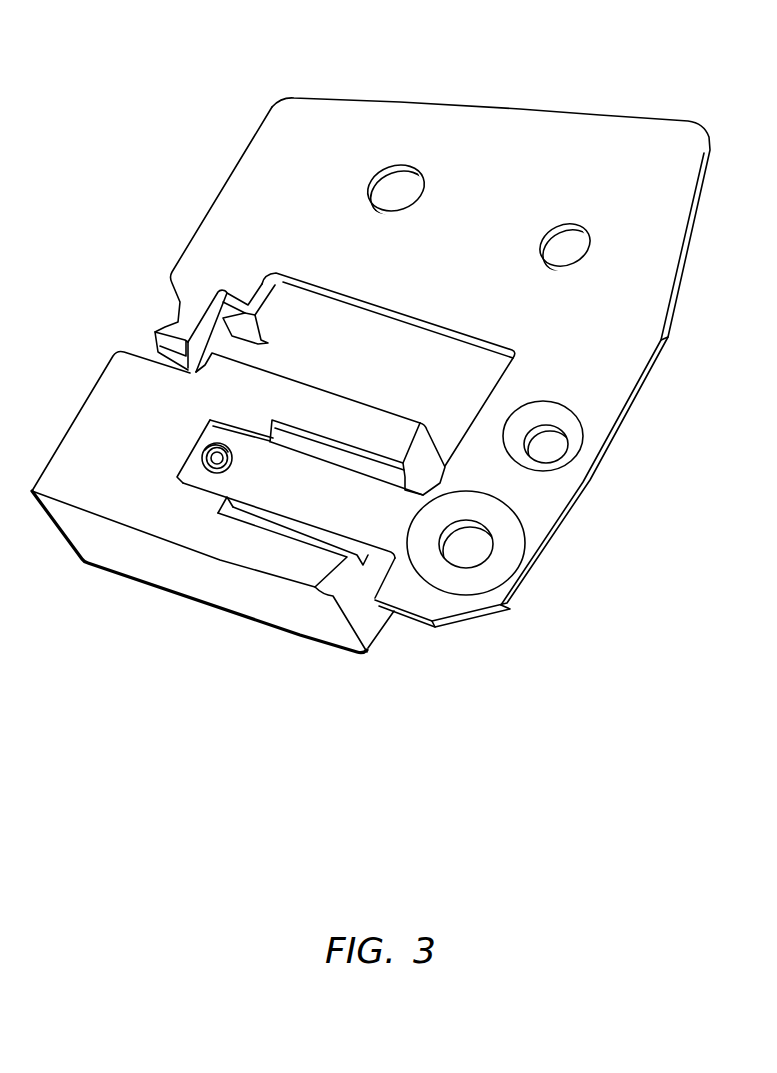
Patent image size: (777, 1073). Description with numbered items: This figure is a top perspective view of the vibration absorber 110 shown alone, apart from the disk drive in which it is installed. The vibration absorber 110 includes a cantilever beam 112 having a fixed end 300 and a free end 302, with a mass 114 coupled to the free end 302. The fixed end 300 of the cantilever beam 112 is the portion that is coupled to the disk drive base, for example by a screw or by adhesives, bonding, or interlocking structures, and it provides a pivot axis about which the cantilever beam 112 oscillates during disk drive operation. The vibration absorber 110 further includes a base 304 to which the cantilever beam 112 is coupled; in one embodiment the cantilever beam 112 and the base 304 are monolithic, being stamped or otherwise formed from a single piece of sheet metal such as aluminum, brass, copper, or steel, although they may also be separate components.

The vibration absorber 110 is at (503, 78).
The base 304 is at (312, 126).
The free end 302 is at (243, 461).
The cantilever beam 112 is at (313, 508).
The mass 114 is at (148, 562).
The fixed end 300 is at (416, 590).